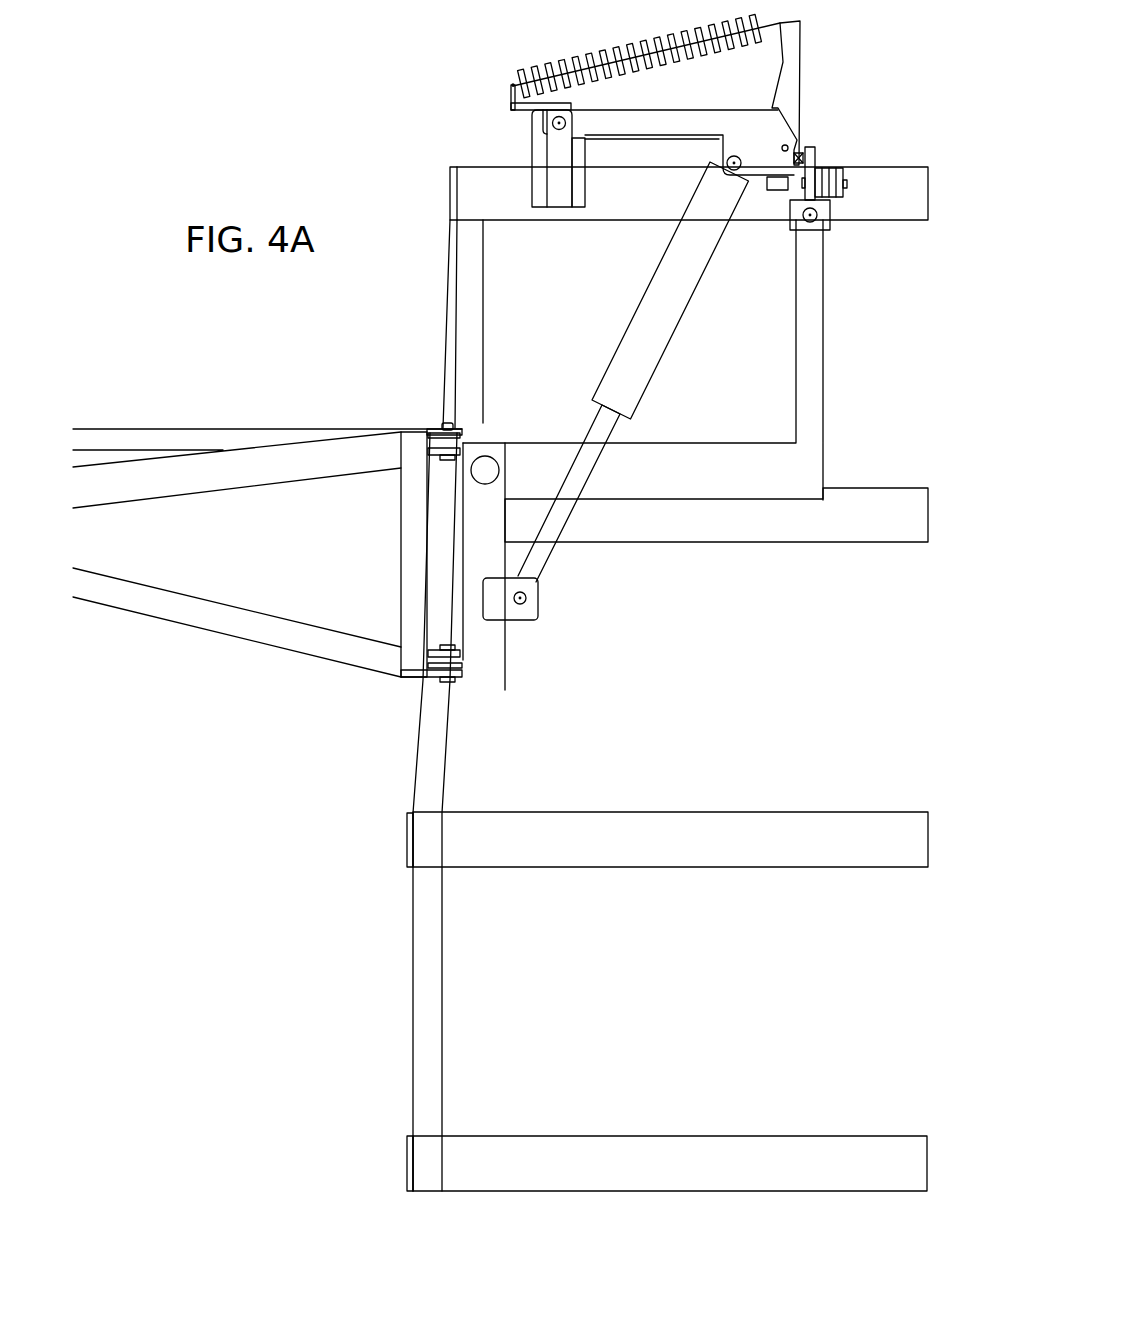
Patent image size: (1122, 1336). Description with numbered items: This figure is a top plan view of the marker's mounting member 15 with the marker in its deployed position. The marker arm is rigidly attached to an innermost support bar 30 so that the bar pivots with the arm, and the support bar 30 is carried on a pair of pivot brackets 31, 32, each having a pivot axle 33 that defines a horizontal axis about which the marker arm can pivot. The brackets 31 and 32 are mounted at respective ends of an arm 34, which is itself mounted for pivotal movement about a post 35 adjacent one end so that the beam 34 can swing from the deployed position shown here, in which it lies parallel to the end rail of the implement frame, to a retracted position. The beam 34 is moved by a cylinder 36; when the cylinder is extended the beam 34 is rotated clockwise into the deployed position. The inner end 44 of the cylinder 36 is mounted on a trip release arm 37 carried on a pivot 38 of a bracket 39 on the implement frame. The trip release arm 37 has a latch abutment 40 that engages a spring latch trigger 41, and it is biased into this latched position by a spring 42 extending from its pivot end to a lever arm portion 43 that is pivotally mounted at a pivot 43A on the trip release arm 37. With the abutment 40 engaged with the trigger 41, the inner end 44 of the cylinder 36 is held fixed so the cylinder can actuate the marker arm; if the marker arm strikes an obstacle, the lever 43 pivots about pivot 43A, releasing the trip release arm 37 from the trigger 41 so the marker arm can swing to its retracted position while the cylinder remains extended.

The mounting member 15 is at (623, 467).
The support bar 30 is at (407, 528).
The pivot bracket 31 is at (437, 428).
The pivot bracket 32 is at (455, 655).
The pivot axle 33 is at (450, 427).
The arm 34 is at (493, 535).
The post 35 is at (487, 462).
The cylinder 36 is at (637, 400).
The trip release arm 37 is at (762, 167).
The pivot 38 is at (553, 123).
The bracket 39 is at (558, 177).
The latch abutment 40 is at (813, 150).
The spring latch trigger 41 is at (813, 148).
The spring 42 is at (565, 70).
The lever arm portion 43 is at (800, 67).
The pivot 43A is at (798, 128).
The inner end 44 is at (720, 192).